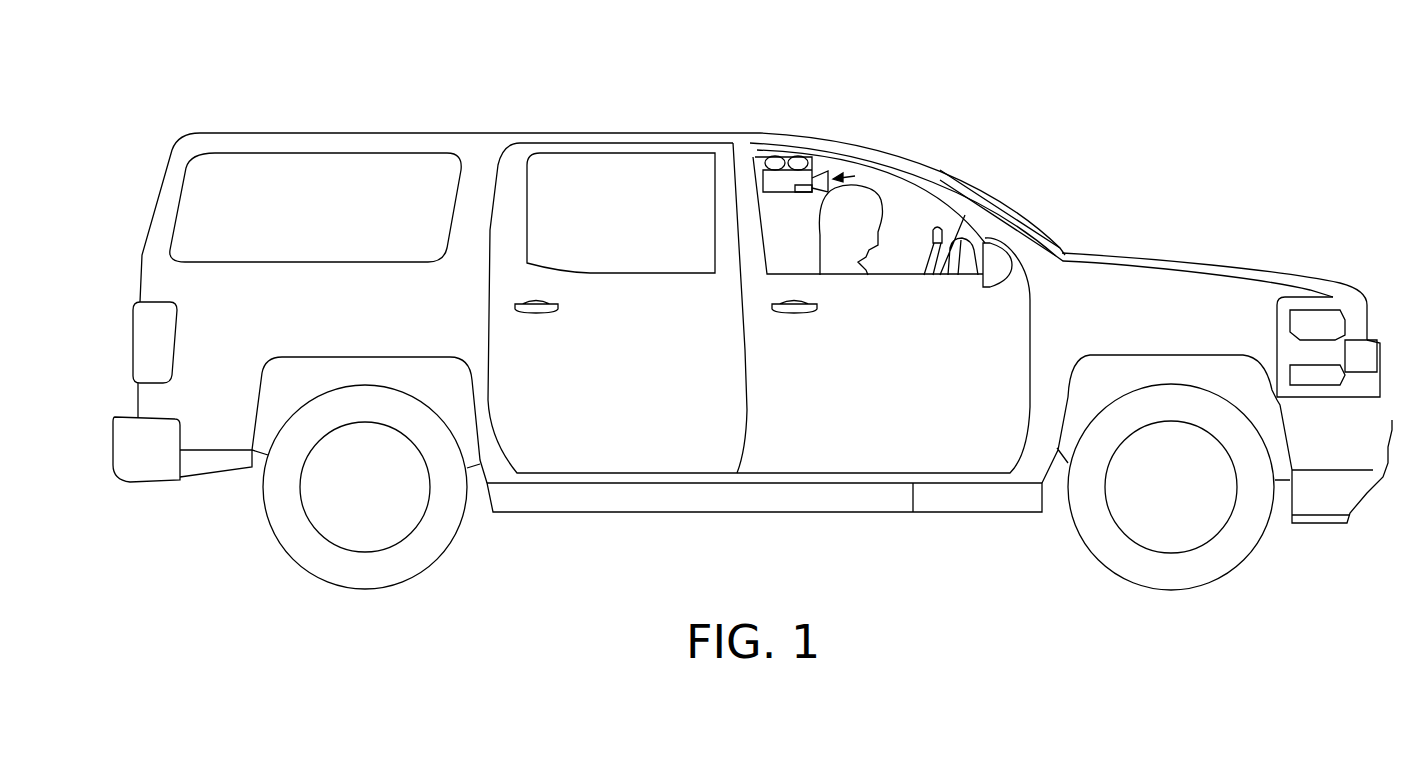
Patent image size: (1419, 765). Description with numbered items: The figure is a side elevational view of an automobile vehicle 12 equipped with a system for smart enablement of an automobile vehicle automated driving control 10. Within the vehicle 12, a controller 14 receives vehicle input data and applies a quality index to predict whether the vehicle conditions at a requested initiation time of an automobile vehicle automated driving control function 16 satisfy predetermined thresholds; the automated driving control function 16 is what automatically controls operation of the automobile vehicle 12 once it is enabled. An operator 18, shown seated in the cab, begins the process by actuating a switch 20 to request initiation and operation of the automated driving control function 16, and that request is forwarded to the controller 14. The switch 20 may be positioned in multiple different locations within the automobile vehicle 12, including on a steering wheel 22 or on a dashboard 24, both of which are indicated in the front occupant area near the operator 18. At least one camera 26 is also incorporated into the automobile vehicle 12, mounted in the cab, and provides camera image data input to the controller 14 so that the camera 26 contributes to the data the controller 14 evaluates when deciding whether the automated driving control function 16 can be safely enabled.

The system for smart enablement of an automobile vehicle automated driving control 10 is at (1097, 97).
The automobile vehicle 12 is at (1158, 288).
The controller 14 is at (772, 180).
The automobile vehicle automated driving control function 16 is at (808, 187).
The operator 18 is at (878, 207).
The switch 20 is at (940, 228).
The steering wheel 22 is at (958, 250).
The dashboard 24 is at (990, 200).
The camera 26 is at (855, 177).